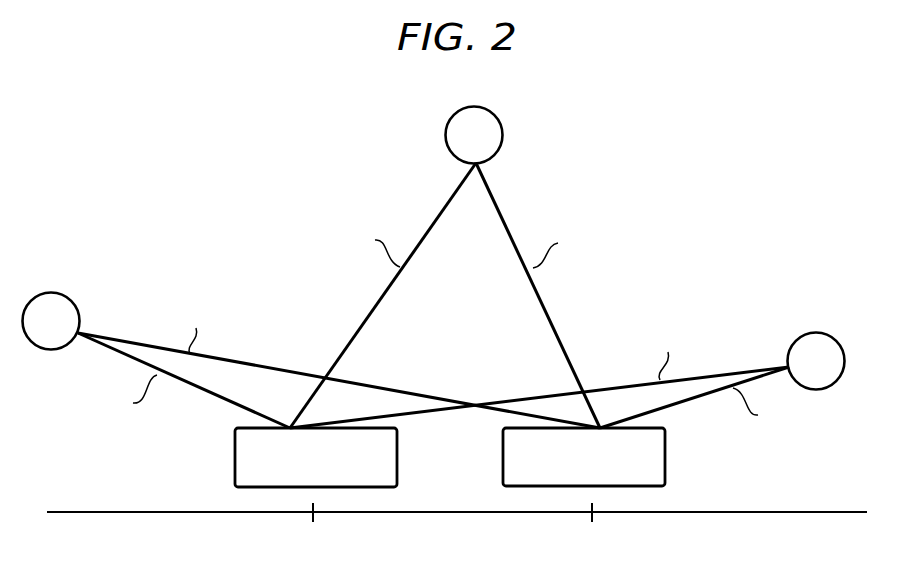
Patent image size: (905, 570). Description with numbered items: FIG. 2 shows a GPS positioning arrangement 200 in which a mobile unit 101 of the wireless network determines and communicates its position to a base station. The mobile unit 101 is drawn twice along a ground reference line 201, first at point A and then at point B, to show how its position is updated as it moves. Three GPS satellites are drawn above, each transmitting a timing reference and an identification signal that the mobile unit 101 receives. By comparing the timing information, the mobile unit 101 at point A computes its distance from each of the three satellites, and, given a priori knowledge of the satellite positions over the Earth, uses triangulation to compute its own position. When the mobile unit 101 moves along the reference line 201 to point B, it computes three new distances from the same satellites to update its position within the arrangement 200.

The positioning system 200 is at (758, 188).
The ground / reference line 201 is at (785, 510).
The mobile unit 101 is at (398, 455).